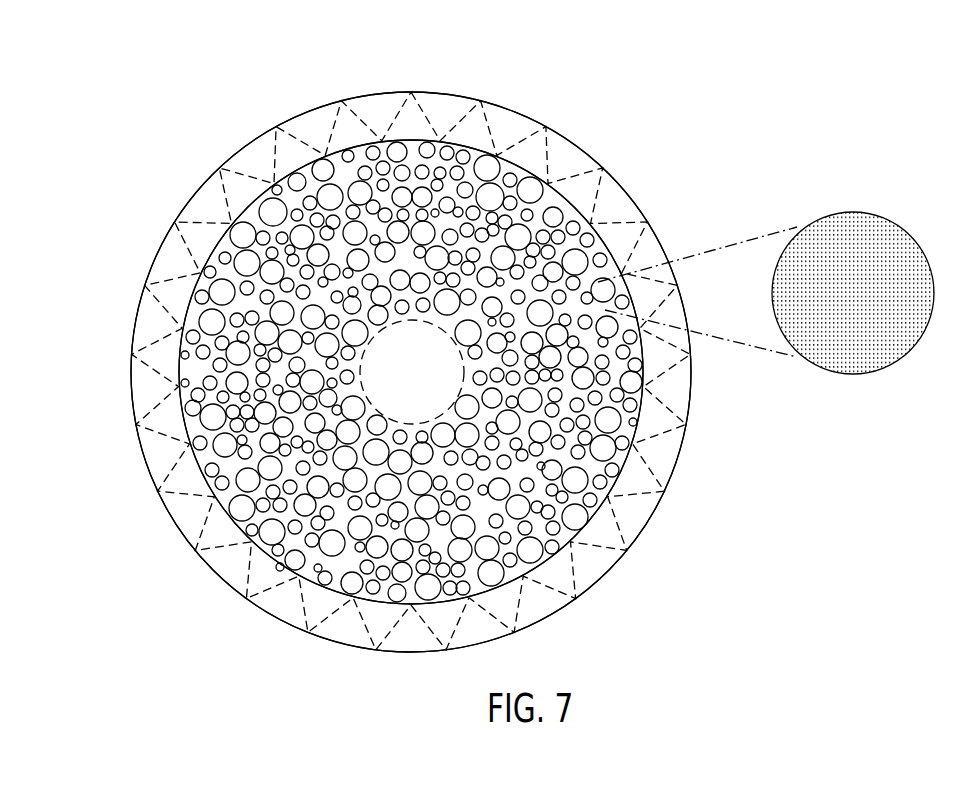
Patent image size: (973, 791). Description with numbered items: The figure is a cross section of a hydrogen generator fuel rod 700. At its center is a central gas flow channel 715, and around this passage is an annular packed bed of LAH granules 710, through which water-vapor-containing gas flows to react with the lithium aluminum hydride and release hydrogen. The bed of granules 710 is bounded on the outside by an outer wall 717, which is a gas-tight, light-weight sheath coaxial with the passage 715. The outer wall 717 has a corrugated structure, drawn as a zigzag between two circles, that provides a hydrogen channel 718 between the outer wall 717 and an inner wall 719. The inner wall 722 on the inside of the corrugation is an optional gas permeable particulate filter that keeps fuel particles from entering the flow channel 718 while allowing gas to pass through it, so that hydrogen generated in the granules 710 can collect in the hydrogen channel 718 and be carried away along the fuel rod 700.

The hydrogen generator fuel rod 700 is at (221, 121).
The LAH granules 710 is at (540, 181).
The central gas flow channel 715 is at (357, 400).
The outer wall 717 is at (456, 93).
The hydrogen channel 718 is at (640, 514).
The inner wall 719 is at (385, 138).
The inner wall 722 is at (556, 565).